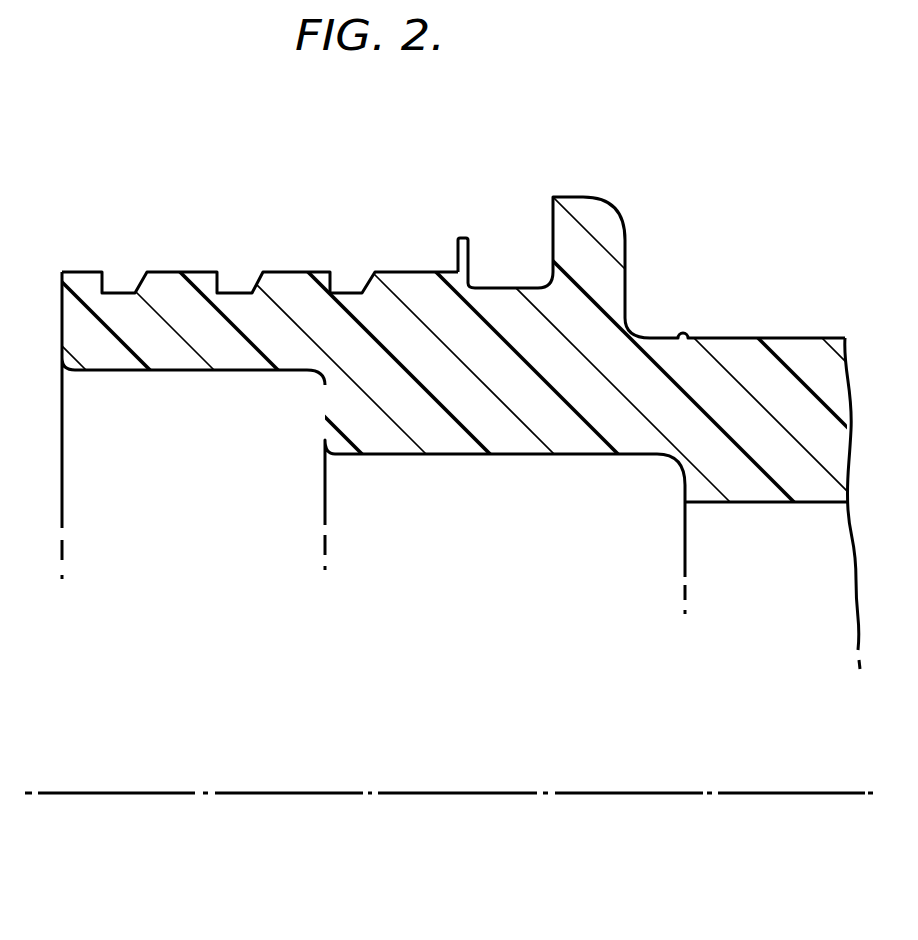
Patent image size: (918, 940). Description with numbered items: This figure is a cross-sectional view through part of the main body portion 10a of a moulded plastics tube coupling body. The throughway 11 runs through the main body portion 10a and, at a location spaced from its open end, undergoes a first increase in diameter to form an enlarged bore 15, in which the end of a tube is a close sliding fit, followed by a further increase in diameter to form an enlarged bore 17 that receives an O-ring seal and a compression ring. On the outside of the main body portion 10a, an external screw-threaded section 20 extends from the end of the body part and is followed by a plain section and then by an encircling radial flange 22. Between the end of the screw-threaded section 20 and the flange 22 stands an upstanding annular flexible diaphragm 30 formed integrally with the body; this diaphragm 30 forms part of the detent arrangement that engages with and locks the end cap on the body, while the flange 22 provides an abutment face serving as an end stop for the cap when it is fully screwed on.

The external screw-threaded section 20 is at (167, 276).
The annular flexible diaphragm 30 is at (455, 243).
The encircling radial flange 22 is at (578, 203).
The main body portion 10a is at (768, 352).
The throughway 11 is at (747, 507).
The enlarged bore 15 is at (467, 458).
The enlarged bore 17 is at (170, 373).